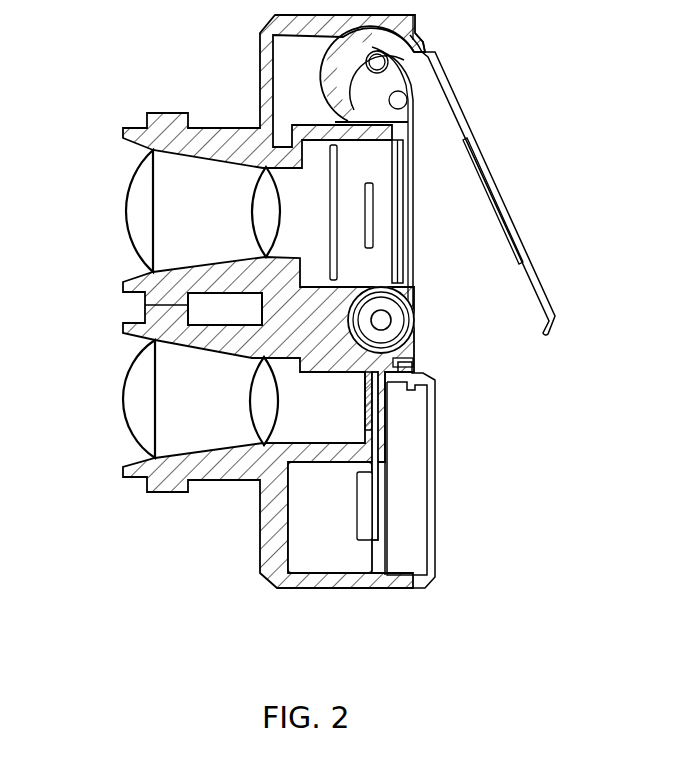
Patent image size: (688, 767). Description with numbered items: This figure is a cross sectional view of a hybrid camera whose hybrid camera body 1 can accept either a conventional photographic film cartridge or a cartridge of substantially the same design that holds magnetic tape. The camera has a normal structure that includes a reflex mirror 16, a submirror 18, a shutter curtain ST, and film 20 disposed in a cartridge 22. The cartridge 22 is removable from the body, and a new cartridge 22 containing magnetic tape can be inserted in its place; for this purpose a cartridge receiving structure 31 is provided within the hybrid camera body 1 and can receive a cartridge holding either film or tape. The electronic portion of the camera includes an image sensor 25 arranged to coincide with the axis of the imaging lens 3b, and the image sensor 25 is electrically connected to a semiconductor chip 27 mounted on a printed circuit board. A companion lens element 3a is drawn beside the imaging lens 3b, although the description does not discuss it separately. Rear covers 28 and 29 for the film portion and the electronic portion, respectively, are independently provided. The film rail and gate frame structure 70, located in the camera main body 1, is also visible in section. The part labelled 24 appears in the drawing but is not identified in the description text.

The hybrid camera body 1 is at (318, 588).
The first objective lens 3a is at (167, 210).
The imaging lens 3b is at (170, 402).
The reflex mirror 16 is at (338, 168).
The submirror 18 is at (373, 213).
The film 20 is at (417, 133).
The cartridge 22 is at (415, 335).
The circuit board 24 is at (383, 533).
The image sensor 25 is at (363, 417).
The semiconductor chip 27 is at (357, 525).
The rear cover 28 is at (542, 282).
The rear cover 29 is at (437, 455).
The cartridge receiving structure 31 is at (247, 357).
The film rail and gate frame structure 70 is at (409, 170).
The shutter curtain ST is at (404, 263).